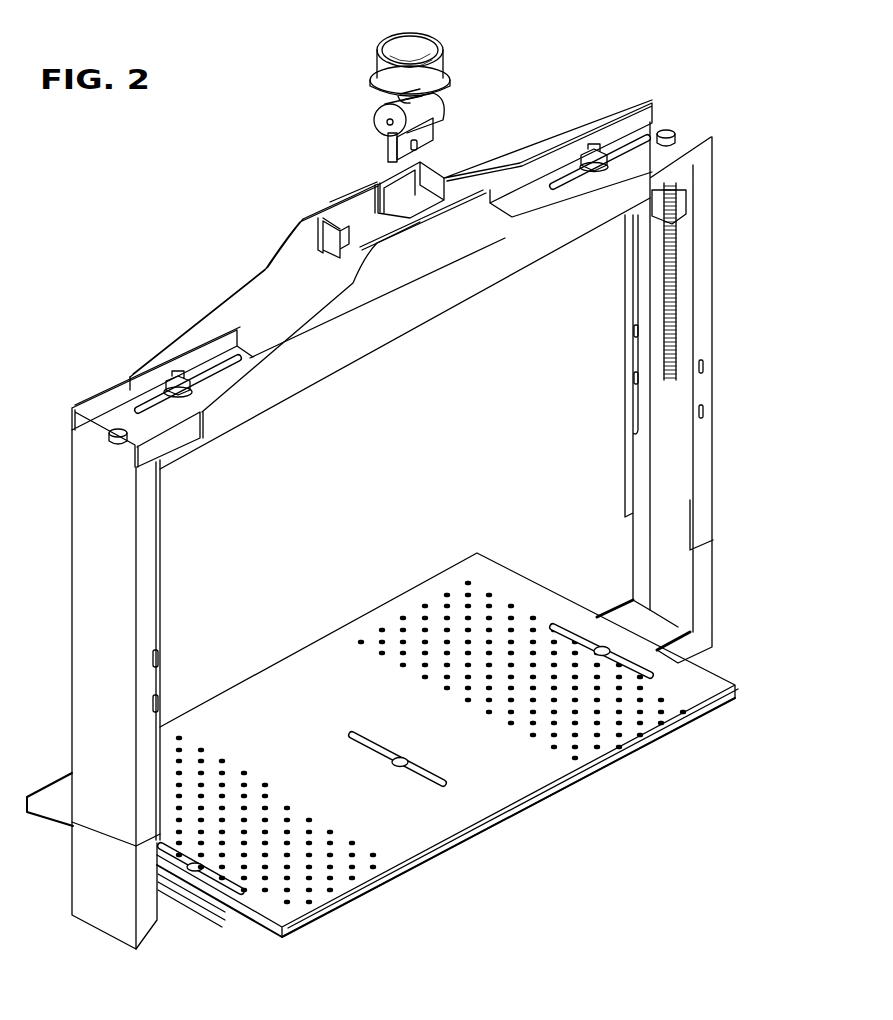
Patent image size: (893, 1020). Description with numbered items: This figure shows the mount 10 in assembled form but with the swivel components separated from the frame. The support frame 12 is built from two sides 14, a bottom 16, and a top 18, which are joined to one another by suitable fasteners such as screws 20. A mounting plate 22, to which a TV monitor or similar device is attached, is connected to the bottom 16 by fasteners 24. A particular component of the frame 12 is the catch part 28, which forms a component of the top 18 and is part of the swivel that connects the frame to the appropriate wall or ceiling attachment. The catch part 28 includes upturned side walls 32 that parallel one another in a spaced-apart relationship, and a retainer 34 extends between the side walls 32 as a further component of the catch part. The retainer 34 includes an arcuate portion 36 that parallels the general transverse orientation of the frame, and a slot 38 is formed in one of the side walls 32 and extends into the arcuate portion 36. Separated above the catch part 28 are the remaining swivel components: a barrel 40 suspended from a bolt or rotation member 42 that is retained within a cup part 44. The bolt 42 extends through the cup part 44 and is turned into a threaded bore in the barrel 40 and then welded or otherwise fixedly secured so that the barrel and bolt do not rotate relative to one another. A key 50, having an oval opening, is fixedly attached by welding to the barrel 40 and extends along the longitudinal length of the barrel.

The mount 10 is at (203, 212).
The support frame 12 is at (713, 253).
The sides 14 is at (72, 608).
The bottom 16 is at (190, 912).
The top 18 is at (112, 392).
The screws 20 is at (177, 377).
The mounting plate 22 is at (445, 820).
The fasteners 24 is at (402, 757).
The catch part 28 is at (360, 318).
The side walls 32 is at (257, 273).
The retainer 34 is at (425, 223).
The arcuate portion 36 is at (432, 190).
The slot 38 is at (365, 200).
The barrel 40 is at (435, 108).
The bolt 42 is at (395, 97).
The cup part 44 is at (440, 55).
The key 50 is at (385, 145).